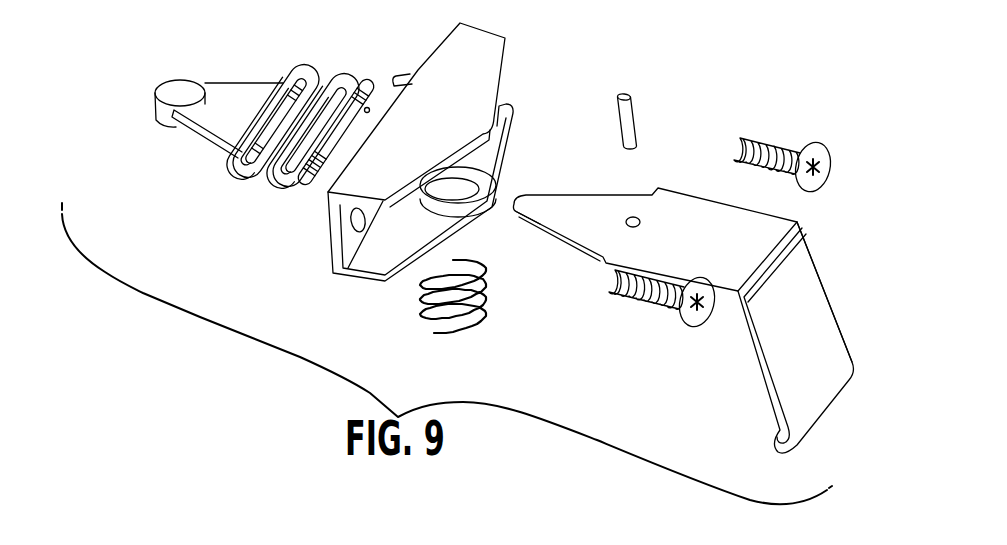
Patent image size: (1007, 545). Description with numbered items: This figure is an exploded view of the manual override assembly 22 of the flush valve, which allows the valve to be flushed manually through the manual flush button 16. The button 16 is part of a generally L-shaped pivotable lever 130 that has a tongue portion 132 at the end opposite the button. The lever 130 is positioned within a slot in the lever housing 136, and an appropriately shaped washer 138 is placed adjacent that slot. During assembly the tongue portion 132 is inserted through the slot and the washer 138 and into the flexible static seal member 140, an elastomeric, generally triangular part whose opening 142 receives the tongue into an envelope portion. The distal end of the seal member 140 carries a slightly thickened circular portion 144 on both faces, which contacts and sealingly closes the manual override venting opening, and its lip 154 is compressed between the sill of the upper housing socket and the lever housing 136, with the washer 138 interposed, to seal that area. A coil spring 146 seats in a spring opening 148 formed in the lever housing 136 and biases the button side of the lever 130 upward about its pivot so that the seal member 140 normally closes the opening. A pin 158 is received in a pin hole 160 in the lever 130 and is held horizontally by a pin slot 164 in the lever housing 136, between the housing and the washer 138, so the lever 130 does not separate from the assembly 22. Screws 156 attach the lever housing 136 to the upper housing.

The manual flush button 16 is at (815, 347).
The manual override assembly 22 is at (725, 93).
The pivotable lever 130 is at (810, 243).
The tongue portion 132 is at (548, 214).
The lever housing 136 is at (358, 182).
The washer 138 is at (351, 76).
The flexible static seal member 140 is at (213, 92).
The opening 142 is at (238, 181).
The thickened circular portion 144 is at (174, 90).
The coil spring 146 is at (474, 337).
The spring opening 148 is at (496, 181).
The lip 154 is at (305, 66).
The screws 156 is at (826, 161).
The pin 158 is at (636, 114).
The pin hole 160 is at (630, 218).
The pin slot 164 is at (308, 188).